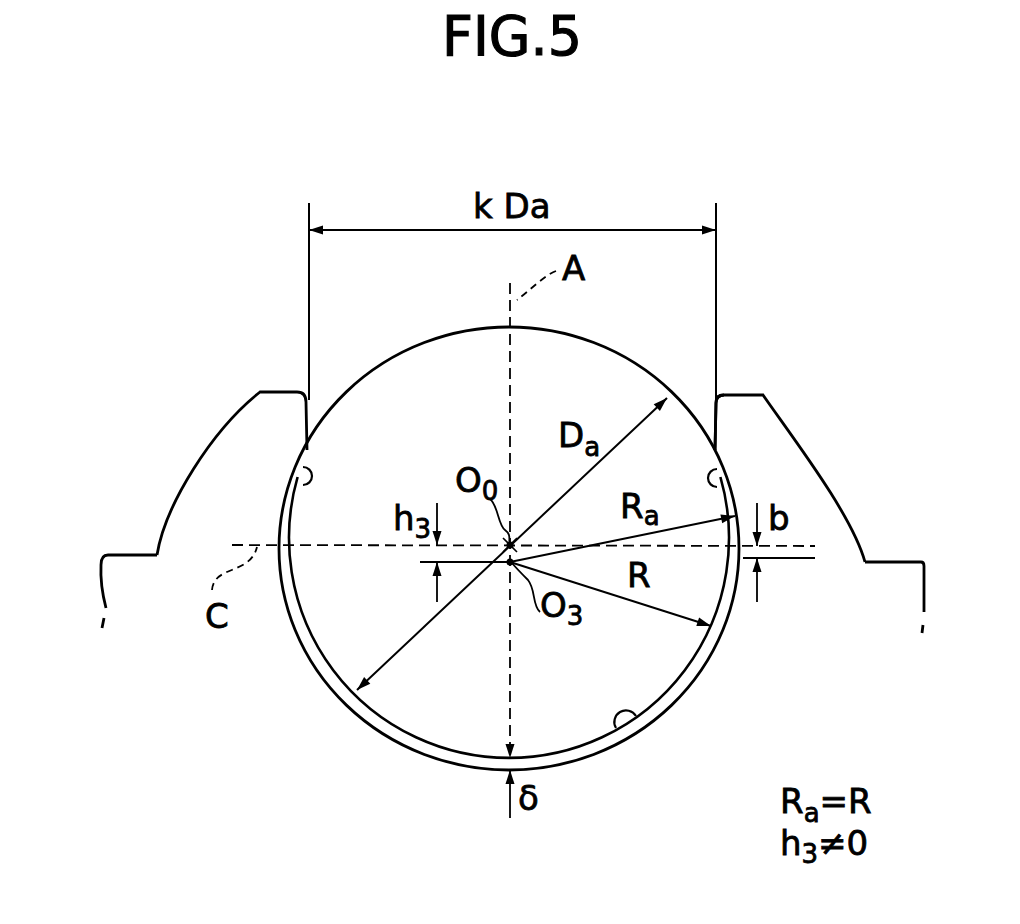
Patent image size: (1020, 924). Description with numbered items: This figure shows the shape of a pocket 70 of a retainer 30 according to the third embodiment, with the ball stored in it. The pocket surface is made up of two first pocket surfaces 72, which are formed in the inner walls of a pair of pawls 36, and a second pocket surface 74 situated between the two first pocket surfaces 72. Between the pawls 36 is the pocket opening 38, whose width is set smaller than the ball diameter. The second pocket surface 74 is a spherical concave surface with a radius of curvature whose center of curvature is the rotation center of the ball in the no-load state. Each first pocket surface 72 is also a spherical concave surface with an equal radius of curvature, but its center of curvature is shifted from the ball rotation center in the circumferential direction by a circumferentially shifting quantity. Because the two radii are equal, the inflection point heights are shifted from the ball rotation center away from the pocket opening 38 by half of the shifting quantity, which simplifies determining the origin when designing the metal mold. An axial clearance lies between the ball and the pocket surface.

The retainer 30 is at (485, 485).
The pawls 36 is at (248, 422).
The pocket opening 38 is at (710, 430).
The pocket 70 is at (450, 740).
The first pocket surfaces 72 is at (292, 487).
The second pocket surface 74 is at (648, 722).